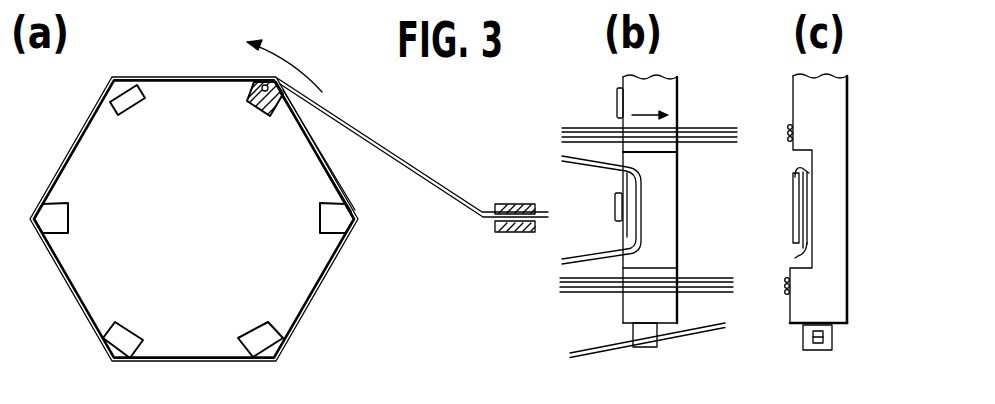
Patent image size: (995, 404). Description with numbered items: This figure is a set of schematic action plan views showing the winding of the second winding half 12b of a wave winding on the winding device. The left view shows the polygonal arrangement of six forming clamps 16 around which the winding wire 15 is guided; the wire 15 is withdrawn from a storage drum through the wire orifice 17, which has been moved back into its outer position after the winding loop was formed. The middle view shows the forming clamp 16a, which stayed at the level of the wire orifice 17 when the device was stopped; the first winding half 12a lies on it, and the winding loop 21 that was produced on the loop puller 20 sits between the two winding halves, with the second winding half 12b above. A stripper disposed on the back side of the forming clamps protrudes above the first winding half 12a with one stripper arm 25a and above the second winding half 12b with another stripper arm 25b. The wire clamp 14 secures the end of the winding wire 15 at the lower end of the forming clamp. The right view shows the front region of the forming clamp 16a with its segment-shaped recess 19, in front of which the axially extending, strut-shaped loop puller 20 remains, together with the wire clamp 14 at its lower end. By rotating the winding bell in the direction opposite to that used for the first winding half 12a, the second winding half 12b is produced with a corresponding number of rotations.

The first winding half 12a is at (583, 290).
The second winding half 12b is at (300, 320).
The wire clamp 14 is at (643, 340).
The winding wire 15 is at (377, 138).
The forming clamp 16 is at (57, 218).
The forming clamp 16a is at (660, 97).
The wire orifice 17 is at (513, 233).
The segment-shaped recess 19 is at (800, 160).
The loop puller 20 is at (797, 217).
The winding loop 21 is at (575, 163).
The stripper arm 25a is at (615, 212).
The stripper arm 25b is at (617, 100).